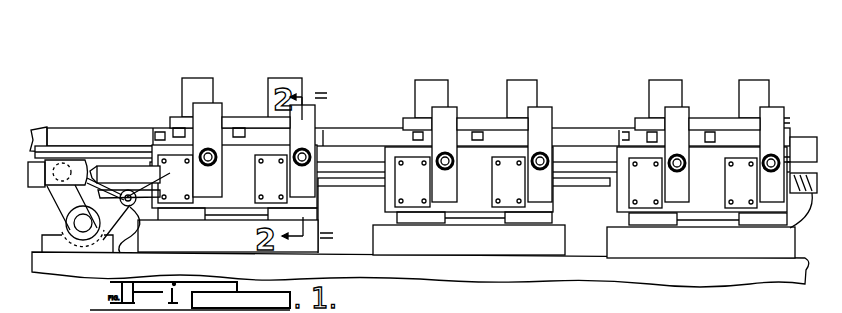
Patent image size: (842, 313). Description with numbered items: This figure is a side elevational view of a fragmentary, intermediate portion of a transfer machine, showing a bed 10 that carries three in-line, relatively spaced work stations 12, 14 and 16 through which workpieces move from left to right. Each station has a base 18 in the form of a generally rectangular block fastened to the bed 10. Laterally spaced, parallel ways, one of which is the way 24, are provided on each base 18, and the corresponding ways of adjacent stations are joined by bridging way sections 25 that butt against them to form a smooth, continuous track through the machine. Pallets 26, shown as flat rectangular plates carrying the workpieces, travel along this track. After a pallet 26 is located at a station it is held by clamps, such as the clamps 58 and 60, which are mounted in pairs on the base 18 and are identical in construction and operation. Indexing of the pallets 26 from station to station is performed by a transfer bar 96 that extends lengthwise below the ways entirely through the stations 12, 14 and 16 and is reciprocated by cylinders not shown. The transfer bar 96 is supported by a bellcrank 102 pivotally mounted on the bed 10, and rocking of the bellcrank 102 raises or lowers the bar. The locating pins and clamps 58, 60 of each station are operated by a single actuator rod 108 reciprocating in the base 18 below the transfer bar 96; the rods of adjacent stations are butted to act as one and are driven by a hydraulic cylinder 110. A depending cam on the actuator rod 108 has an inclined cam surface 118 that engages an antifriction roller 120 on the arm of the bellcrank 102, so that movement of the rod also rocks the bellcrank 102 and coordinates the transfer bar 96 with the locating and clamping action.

The bed 10 is at (590, 273).
The station 12 is at (250, 61).
The station 14 is at (468, 72).
The station 16 is at (692, 72).
The base 18 is at (248, 190).
The way 24 is at (250, 130).
The bridging way section 25 is at (93, 130).
The pallet 26 is at (232, 117).
The clamp 58 is at (196, 113).
The clamp 60 is at (315, 120).
The transfer bar 96 is at (45, 128).
The bellcrank 102 is at (121, 240).
The actuator rod 108 is at (340, 180).
The hydraulic cylinder 110 is at (422, 188).
The inclined cam surface 118 is at (150, 183).
The antifriction roller 120 is at (135, 226).